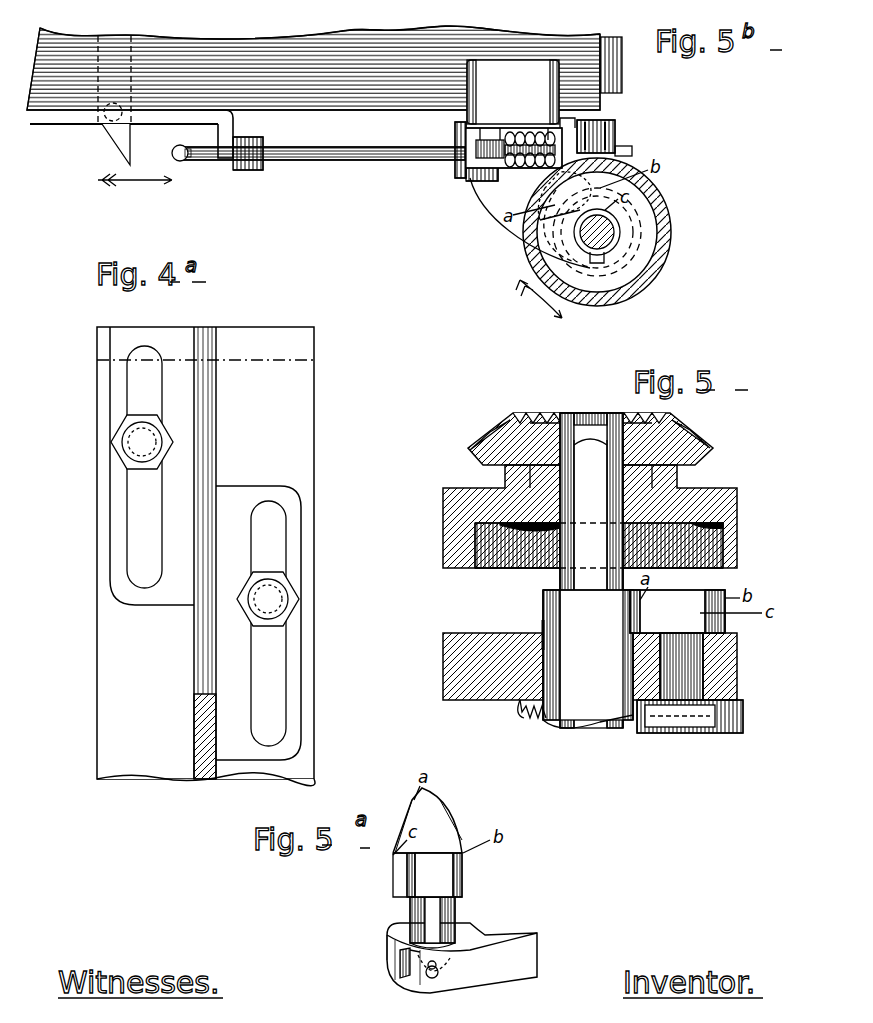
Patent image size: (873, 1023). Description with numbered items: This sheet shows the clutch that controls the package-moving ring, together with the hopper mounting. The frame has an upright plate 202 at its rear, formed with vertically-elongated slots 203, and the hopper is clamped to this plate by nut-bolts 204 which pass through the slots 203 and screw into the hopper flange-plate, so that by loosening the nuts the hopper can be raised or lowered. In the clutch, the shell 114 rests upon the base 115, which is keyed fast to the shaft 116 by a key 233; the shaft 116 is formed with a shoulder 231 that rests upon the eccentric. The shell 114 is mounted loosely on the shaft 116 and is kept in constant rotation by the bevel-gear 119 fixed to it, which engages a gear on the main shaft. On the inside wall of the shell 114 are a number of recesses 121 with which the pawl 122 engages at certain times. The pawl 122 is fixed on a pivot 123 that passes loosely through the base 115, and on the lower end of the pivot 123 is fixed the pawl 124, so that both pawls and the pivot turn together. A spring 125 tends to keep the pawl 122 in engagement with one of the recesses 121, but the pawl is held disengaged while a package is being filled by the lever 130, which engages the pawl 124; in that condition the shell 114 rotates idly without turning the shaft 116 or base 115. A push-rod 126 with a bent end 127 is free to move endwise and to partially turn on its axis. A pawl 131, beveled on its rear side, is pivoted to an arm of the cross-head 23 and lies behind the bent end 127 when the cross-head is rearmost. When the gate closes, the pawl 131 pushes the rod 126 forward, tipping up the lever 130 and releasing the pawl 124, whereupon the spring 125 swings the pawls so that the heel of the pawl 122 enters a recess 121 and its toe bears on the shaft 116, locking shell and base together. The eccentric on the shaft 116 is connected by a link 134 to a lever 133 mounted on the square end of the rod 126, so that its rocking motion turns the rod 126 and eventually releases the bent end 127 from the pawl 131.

In FIG. 5B, the cross-head 23 is at (98, 124).
In FIG. 5B, the pawl 131 is at (118, 138).
In FIG. 5B, the bent end 127 is at (188, 163).
In FIG. 5B, the push-rod 126 is at (410, 158).
In FIG. 5B, the lever 130 is at (480, 178).
In FIG. 5B, the pivot 123 is at (552, 172).
In FIG. 5, the pivot 123 is at (690, 675).
In FIG. 5A, the pivot 123 is at (438, 905).
In FIG. 5B, the shaft 116 is at (610, 236).
In FIG. 5, the shaft 116 is at (591, 570).
In FIG. 5B, the shoulder 231 is at (620, 246).
In FIG. 5, the shoulder 231 is at (565, 606).
In FIG. 5B, the pawl 122 is at (560, 203).
In FIG. 5, the pawl 122 is at (680, 585).
In FIG. 5B, the pawl 124 is at (560, 130).
In FIG. 5, the pawl 124 is at (745, 727).
In FIG. 5A, the pawl 124 is at (538, 938).
In FIG. 5B, the lever 133 is at (617, 132).
In FIG. 5B, the link 134 is at (633, 152).
In FIG. 4A, the upright plate 202 is at (270, 410).
In FIG. 4A, the vertically-elongated slots 203 is at (130, 510).
In FIG. 4A, the nut-bolts 204 is at (130, 437).
In FIG. 5, the shell 114 is at (738, 495).
In FIG. 5, the bevel-gear 119 is at (690, 452).
In FIG. 5, the recesses 121 is at (724, 547).
In FIG. 5, the base 115 is at (738, 655).
In FIG. 5, the key 233 is at (543, 630).
In FIG. 5, the spring 125 is at (538, 722).